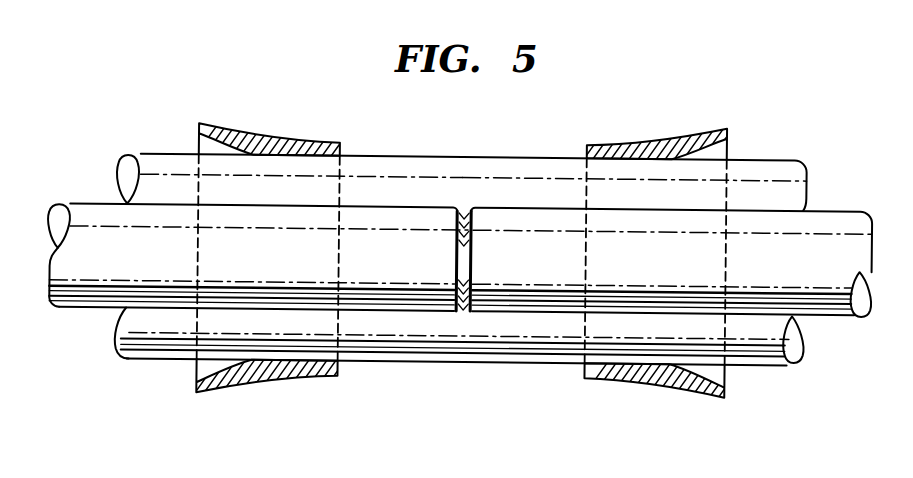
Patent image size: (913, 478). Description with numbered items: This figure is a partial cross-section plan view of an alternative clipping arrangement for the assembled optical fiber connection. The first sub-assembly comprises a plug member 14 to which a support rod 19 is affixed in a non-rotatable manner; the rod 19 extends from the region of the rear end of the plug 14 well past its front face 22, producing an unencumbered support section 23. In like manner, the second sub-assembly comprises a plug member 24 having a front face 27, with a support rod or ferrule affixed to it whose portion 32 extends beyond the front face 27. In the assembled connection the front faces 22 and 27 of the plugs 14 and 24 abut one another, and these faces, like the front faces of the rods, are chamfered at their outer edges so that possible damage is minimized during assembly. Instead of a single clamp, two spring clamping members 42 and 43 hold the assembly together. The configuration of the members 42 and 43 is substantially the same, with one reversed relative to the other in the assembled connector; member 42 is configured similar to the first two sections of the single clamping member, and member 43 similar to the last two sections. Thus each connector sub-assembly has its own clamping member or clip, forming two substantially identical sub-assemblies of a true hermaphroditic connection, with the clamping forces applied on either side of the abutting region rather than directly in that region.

The plug member 14 is at (826, 314).
The support rod 19 is at (771, 157).
The front face 22 is at (455, 240).
The unencumbered support section 23 is at (163, 164).
The plug member 24 is at (88, 211).
The front face 27 is at (468, 240).
The portion 32 is at (762, 363).
The spring clamping member 42 is at (227, 128).
The spring clamping member 43 is at (699, 134).